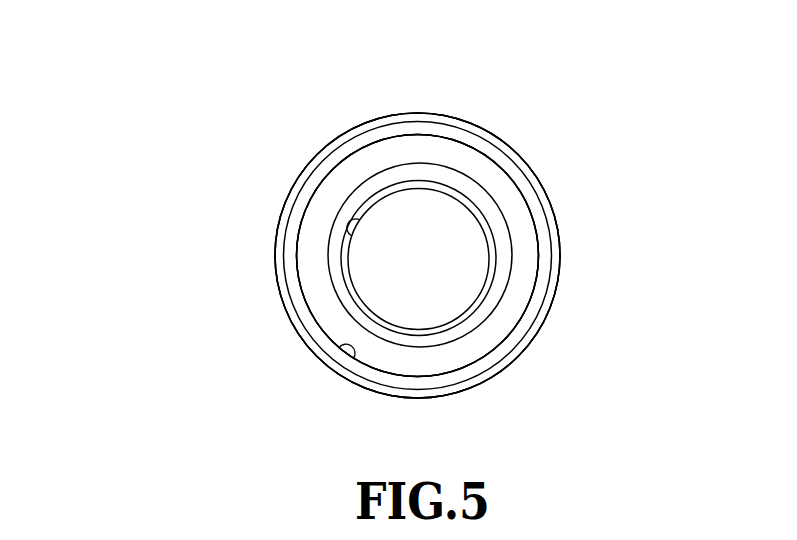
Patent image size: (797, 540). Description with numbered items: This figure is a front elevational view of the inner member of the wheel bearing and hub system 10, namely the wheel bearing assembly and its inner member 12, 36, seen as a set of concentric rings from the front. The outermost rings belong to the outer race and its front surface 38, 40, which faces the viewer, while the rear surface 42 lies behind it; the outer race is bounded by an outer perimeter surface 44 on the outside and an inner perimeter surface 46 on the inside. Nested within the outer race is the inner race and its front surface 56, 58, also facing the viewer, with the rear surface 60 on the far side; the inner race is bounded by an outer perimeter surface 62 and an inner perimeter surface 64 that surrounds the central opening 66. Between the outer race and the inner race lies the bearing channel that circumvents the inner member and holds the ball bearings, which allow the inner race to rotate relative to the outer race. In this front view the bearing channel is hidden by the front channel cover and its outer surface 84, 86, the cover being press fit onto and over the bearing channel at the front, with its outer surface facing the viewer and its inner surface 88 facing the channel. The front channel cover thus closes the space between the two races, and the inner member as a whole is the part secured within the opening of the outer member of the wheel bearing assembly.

The wheel bearing and hub system 10 is at (95, 88).
The assembly / nozzle body 12, 36 is at (594, 140).
The outer wall / casing 38, 40 is at (545, 278).
The rear surface 42 is at (551, 323).
The outer perimeter surface 44 is at (497, 375).
The inner perimeter surface 46 is at (345, 351).
The inner wall / passage 56, 58 is at (340, 292).
The rear surface 60 is at (316, 286).
The outer perimeter surface 62 is at (332, 255).
The inner perimeter surface 64 is at (358, 222).
The opening 66 is at (430, 203).
The annular channel 84, 86 is at (525, 243).
The inner surface 88 is at (523, 229).